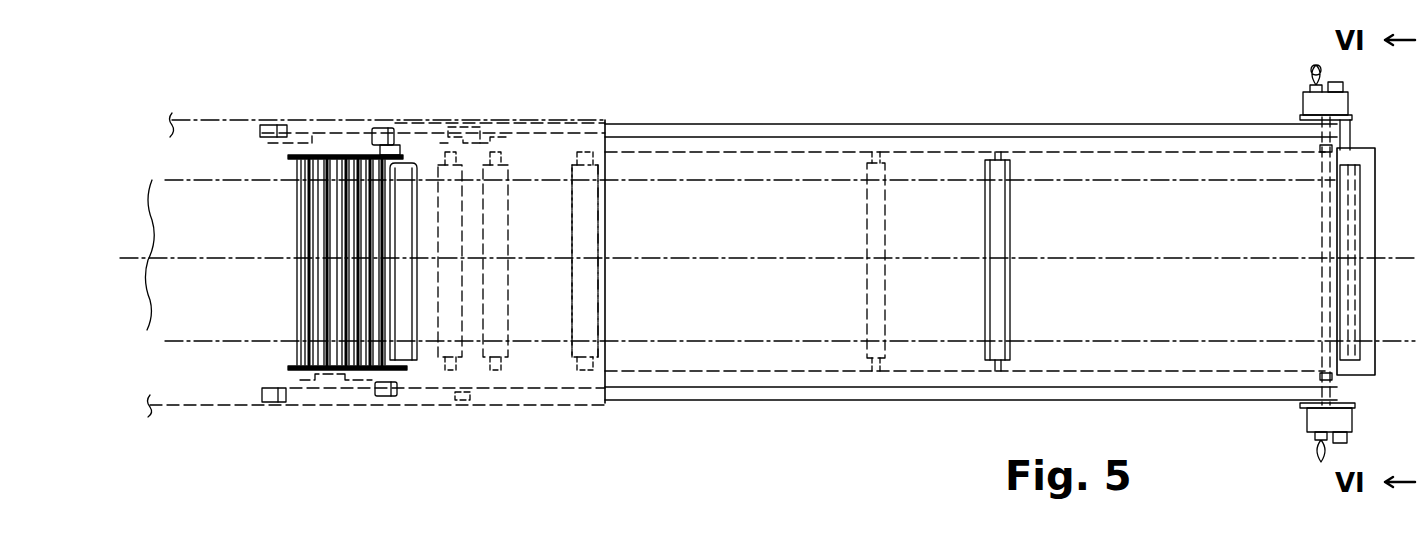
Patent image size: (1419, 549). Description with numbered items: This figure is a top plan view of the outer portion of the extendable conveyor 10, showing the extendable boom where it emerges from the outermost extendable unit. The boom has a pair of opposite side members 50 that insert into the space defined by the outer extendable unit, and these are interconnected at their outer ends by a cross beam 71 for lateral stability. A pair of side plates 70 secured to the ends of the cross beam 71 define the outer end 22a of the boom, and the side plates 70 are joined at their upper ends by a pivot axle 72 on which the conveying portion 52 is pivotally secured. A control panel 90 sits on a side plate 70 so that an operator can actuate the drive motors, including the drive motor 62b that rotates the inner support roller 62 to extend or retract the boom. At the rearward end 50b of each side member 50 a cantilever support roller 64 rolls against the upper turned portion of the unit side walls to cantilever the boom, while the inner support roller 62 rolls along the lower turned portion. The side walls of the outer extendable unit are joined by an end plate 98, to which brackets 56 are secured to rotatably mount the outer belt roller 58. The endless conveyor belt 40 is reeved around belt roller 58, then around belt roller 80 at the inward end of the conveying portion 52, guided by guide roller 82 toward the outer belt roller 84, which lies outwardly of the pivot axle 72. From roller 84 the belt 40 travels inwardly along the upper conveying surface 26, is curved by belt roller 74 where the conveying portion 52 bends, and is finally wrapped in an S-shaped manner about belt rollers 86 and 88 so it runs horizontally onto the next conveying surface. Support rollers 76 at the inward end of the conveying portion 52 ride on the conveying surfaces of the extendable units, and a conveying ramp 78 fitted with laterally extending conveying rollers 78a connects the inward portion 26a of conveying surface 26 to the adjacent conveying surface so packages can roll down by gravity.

The extendable conveyor 10 is at (332, 36).
The outer end of extendable boom 22a is at (1320, 407).
The upper conveying surface 26 is at (945, 360).
The inward portion of conveying surface 26a is at (413, 155).
The conveyor belt 40 is at (737, 340).
The side members 50 is at (848, 128).
The rearward end of side member 50b is at (305, 405).
The conveying portion 52 is at (755, 163).
The brackets 56 is at (603, 157).
The outer belt roller 58 is at (586, 212).
The inner support roller 62 is at (463, 120).
The drive motor 62b is at (487, 118).
The cantilever support roller 64 is at (272, 125).
The side plates 70 is at (1355, 115).
The cross beam 71 is at (1352, 135).
The pivot axle 72 is at (1318, 383).
The belt roller 74 is at (1010, 278).
The support rollers 76 is at (380, 128).
The conveying ramp 78 is at (267, 200).
The conveying rollers 78a is at (297, 282).
The belt roller 80 is at (495, 207).
The guide roller 82 is at (880, 242).
The outer belt roller 84 is at (1350, 248).
The belt roller 86 is at (405, 330).
The belt roller 88 is at (452, 253).
The control panel 90 is at (1305, 105).
The end plate 98 is at (607, 267).